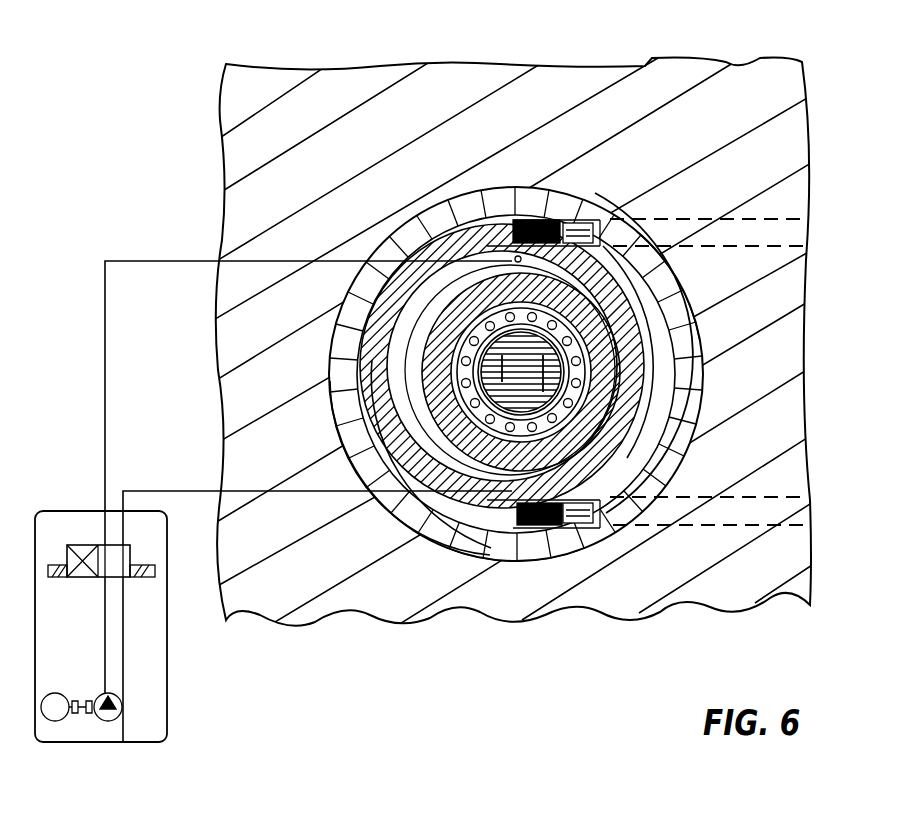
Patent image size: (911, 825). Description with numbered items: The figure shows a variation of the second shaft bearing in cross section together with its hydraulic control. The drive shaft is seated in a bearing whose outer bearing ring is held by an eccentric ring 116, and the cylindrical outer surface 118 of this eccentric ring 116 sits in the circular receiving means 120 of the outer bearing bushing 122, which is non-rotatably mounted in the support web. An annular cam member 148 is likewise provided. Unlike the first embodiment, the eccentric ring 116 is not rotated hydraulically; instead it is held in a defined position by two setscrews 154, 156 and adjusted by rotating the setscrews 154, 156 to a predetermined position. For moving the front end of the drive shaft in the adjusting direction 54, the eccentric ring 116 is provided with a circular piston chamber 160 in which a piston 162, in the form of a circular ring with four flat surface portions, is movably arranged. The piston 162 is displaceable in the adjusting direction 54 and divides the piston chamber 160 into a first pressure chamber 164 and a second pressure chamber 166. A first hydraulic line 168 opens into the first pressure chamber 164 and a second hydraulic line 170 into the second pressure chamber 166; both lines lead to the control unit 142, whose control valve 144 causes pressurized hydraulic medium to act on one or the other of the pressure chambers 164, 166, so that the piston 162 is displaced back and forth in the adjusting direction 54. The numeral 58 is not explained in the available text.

The adjusting direction 54 is at (445, 333).
The bearing 58 is at (506, 462).
The eccentric ring 116 is at (404, 548).
The cylindrical outer surface 118 is at (365, 405).
The circular receiving means 120 is at (684, 426).
The outer bearing bushing 122 is at (680, 356).
The control unit 142 is at (79, 619).
The control valve 144 is at (75, 543).
The annular cam member 148 is at (403, 209).
The setscrew 154 is at (528, 218).
The setscrew 156 is at (592, 559).
The circular piston chamber 160 is at (570, 484).
The piston 162 is at (690, 293).
The first pressure chamber 164 is at (522, 565).
The second pressure chamber 166 is at (632, 214).
The first hydraulic line 168 is at (262, 493).
The second hydraulic line 170 is at (258, 260).